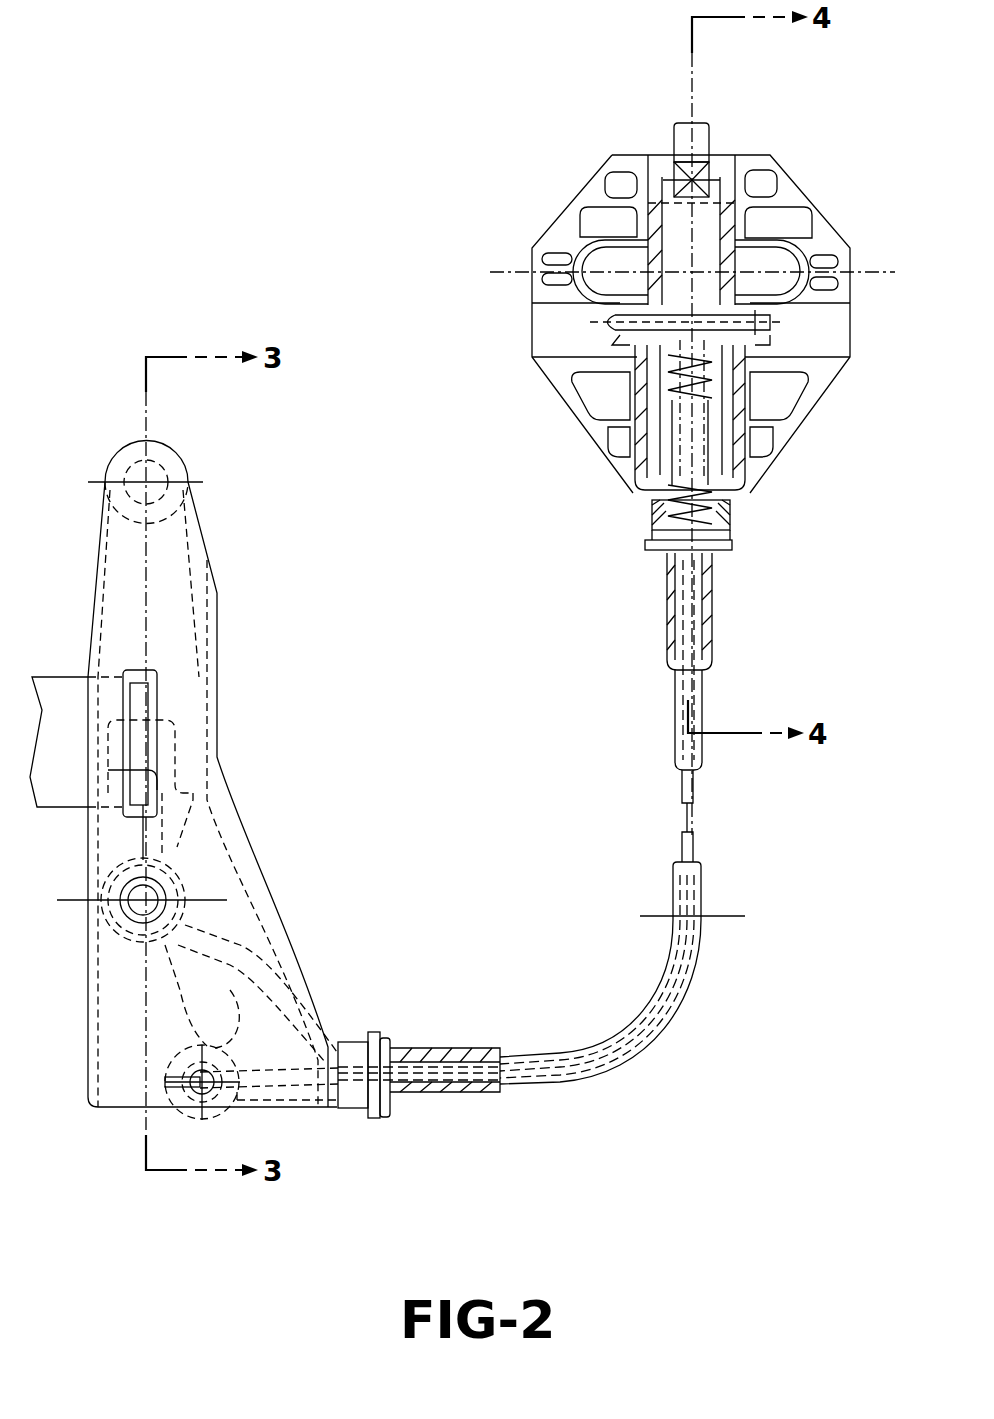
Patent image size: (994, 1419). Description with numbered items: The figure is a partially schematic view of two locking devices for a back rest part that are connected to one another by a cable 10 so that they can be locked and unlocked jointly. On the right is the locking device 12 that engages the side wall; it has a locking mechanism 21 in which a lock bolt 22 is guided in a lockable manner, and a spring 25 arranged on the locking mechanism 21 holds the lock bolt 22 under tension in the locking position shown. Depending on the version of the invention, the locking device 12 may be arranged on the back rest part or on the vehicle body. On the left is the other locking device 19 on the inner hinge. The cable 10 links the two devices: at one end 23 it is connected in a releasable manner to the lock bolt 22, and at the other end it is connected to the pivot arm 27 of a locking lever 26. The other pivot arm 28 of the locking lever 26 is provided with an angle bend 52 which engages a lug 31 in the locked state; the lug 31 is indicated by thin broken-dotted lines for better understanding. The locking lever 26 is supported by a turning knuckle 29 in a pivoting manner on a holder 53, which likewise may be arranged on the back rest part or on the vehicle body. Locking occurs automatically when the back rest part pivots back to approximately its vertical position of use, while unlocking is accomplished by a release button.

The cable 10 is at (688, 837).
The locking device 12 is at (815, 128).
The locking device 19 is at (252, 470).
The locking mechanism 21 is at (833, 347).
The lock bolt 22 is at (583, 247).
The end of cable 23 is at (730, 590).
The spring 25 is at (673, 400).
The locking lever 26 is at (183, 857).
The pivot arm 27 is at (243, 1027).
The pivot arm 28 is at (168, 750).
The turning knuckle 29 is at (140, 912).
The lug 31 is at (135, 678).
The angle bend 52 is at (118, 747).
The holder 53 is at (183, 568).